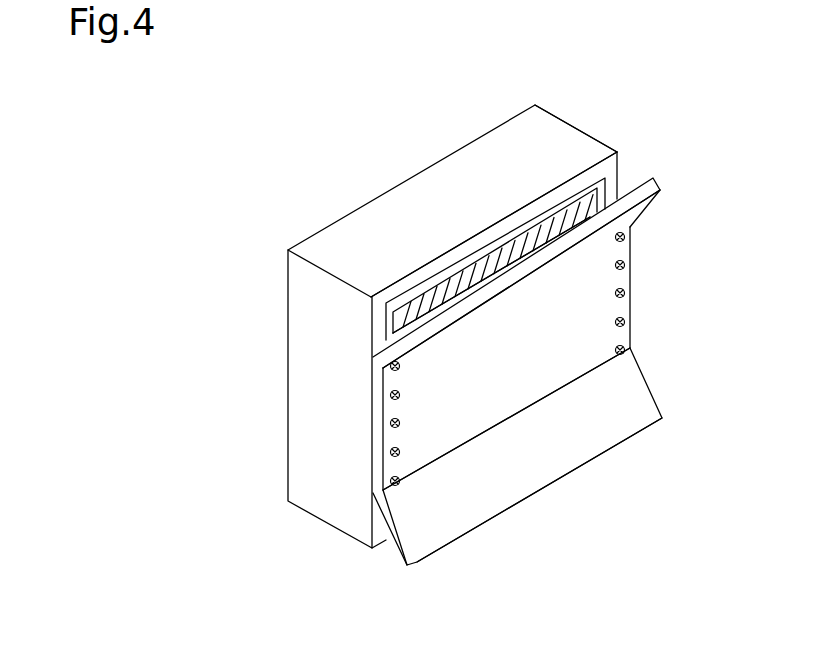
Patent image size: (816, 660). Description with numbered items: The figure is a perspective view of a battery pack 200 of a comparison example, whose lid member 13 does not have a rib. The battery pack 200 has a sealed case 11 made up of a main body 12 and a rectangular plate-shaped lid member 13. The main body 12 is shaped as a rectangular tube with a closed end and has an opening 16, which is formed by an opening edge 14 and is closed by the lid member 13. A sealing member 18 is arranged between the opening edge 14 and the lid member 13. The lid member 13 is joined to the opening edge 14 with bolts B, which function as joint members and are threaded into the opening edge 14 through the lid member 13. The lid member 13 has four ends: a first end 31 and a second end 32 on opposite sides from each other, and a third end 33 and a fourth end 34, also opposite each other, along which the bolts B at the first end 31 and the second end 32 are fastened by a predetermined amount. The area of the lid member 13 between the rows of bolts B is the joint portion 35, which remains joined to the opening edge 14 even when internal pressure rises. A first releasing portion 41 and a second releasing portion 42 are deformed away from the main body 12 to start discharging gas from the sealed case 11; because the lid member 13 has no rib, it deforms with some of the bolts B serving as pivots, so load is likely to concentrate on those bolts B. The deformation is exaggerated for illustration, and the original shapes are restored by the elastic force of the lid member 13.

The battery pack 200 is at (248, 168).
The sealed case 11 is at (682, 91).
The main body 12 is at (578, 133).
The lid member 13 is at (653, 176).
The opening edge 14 is at (376, 324).
The opening 16 is at (554, 213).
The sealing member 18 is at (420, 289).
The first end 31 is at (376, 443).
The second end 32 is at (631, 305).
The third end 33 is at (525, 261).
The fourth end 34 is at (513, 507).
The joint portion 35 is at (390, 407).
The first releasing portion 41 is at (490, 298).
The second releasing portion 42 is at (563, 462).
The bolt B is at (400, 368).